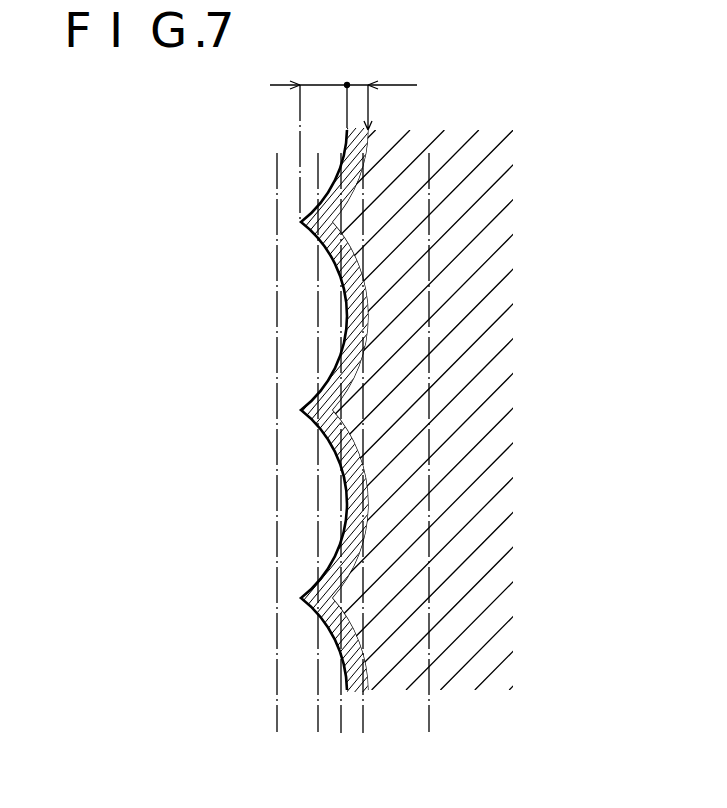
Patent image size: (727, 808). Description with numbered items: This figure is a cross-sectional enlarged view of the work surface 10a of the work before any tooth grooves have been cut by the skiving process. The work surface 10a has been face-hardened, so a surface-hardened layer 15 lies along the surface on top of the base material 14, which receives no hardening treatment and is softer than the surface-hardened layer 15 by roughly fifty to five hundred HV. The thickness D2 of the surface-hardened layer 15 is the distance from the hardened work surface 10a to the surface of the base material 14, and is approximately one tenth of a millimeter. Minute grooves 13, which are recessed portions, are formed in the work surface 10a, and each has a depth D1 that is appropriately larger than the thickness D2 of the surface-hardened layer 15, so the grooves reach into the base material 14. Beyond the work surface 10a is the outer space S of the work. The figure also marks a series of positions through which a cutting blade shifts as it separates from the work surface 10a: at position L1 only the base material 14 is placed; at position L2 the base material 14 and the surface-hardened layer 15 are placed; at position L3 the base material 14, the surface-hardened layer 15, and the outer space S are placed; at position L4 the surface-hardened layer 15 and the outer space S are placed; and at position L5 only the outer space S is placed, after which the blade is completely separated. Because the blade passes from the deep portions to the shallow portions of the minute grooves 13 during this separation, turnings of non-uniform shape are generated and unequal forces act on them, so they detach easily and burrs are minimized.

The minute grooves 13 is at (332, 262).
The base material 14 is at (462, 404).
The surface-hardened layer 15 is at (358, 498).
The work surface 10a is at (340, 548).
The outer space S is at (255, 379).
The depth D1 is at (343, 138).
The thickness D2 is at (394, 68).
The position L1 is at (431, 707).
The position L2 is at (365, 702).
The position L3 is at (343, 720).
The position L4 is at (318, 712).
The position L5 is at (277, 675).